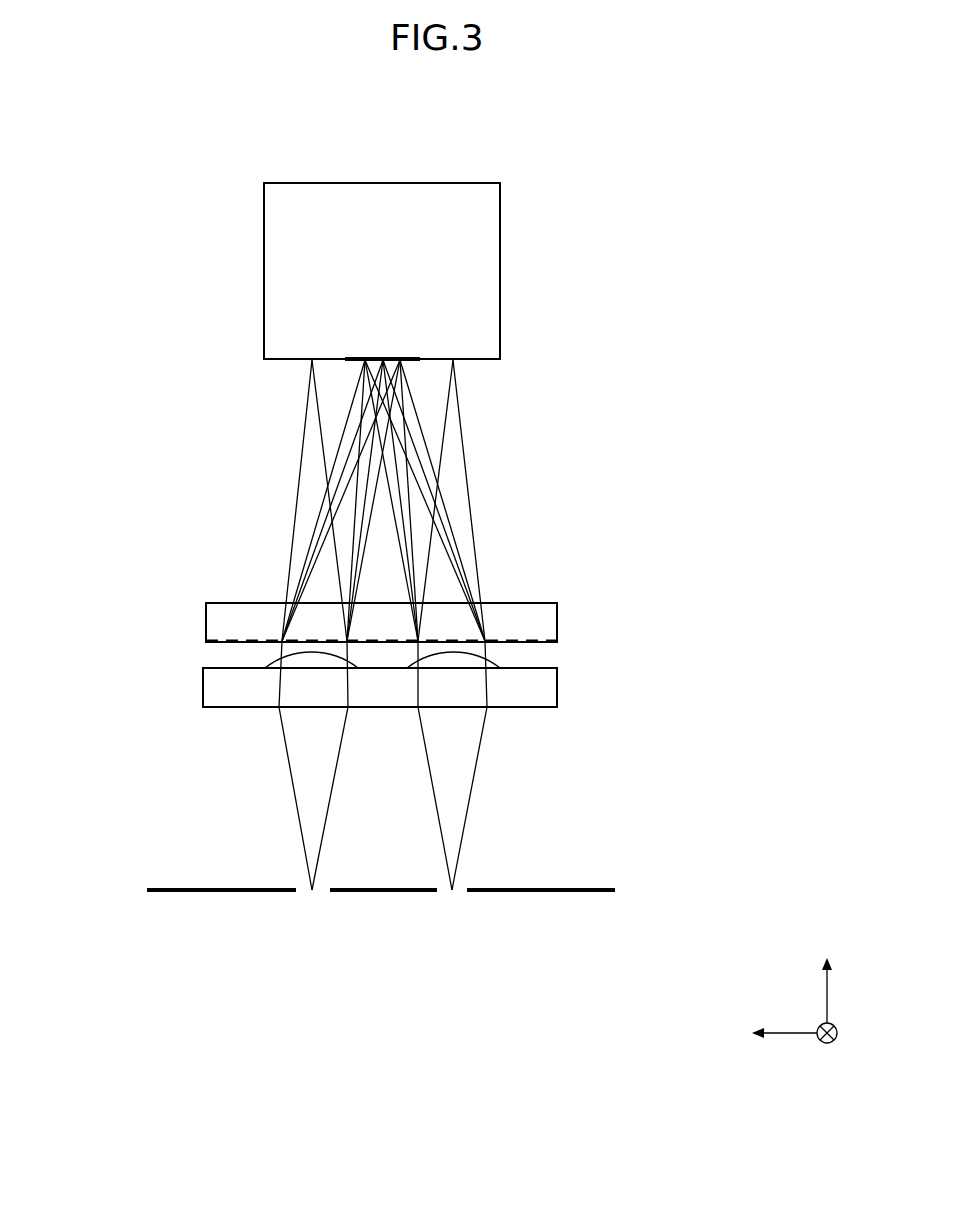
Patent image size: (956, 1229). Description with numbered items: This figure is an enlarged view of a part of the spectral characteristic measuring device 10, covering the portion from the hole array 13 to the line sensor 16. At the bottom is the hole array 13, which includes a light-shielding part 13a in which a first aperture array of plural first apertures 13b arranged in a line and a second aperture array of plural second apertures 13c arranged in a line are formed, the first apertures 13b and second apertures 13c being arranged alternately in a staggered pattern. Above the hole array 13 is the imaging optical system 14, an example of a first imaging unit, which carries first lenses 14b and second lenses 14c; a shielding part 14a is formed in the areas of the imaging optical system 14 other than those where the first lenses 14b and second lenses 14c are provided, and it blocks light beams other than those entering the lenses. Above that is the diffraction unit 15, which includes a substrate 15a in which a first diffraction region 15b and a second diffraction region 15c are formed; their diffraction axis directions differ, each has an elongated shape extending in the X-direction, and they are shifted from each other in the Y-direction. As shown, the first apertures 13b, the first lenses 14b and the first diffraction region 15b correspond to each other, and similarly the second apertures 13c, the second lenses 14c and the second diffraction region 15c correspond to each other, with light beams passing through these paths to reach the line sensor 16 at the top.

The spectral characteristic measuring device 10 is at (68, 116).
The hole array 13 is at (392, 902).
The light-shielding part 13a is at (175, 893).
The first apertures 13b is at (312, 892).
The second apertures 13c is at (452, 892).
The imaging optical system 14 is at (382, 694).
The shielding part 14a is at (230, 668).
The first lenses 14b is at (307, 660).
The second lenses 14c is at (455, 660).
The diffraction unit 15 is at (566, 620).
The substrate 15a is at (232, 603).
The first diffraction region 15b is at (318, 627).
The second diffraction region 15c is at (447, 625).
The line sensor 16 is at (500, 271).